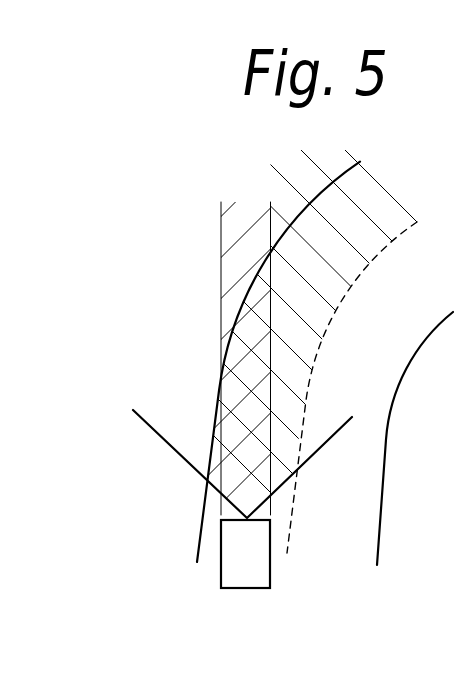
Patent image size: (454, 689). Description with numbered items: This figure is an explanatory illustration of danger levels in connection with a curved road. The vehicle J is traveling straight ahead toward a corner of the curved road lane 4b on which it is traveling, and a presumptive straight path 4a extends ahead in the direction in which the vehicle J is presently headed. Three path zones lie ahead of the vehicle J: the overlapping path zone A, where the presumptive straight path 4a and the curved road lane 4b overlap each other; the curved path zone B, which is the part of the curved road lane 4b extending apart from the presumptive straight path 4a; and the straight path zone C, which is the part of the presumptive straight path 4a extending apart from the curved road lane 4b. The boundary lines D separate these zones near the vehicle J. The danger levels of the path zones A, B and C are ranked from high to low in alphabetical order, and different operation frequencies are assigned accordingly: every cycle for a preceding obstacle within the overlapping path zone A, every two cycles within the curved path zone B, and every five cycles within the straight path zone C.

The presumptive straight path 4a is at (221, 194).
The curved road lane 4b is at (302, 320).
The overlapping path zone A is at (230, 388).
The curved path zone B is at (355, 267).
The straight path zone C is at (228, 265).
The intersecting V-shaped lines D is at (317, 452).
The vehicle J is at (227, 582).